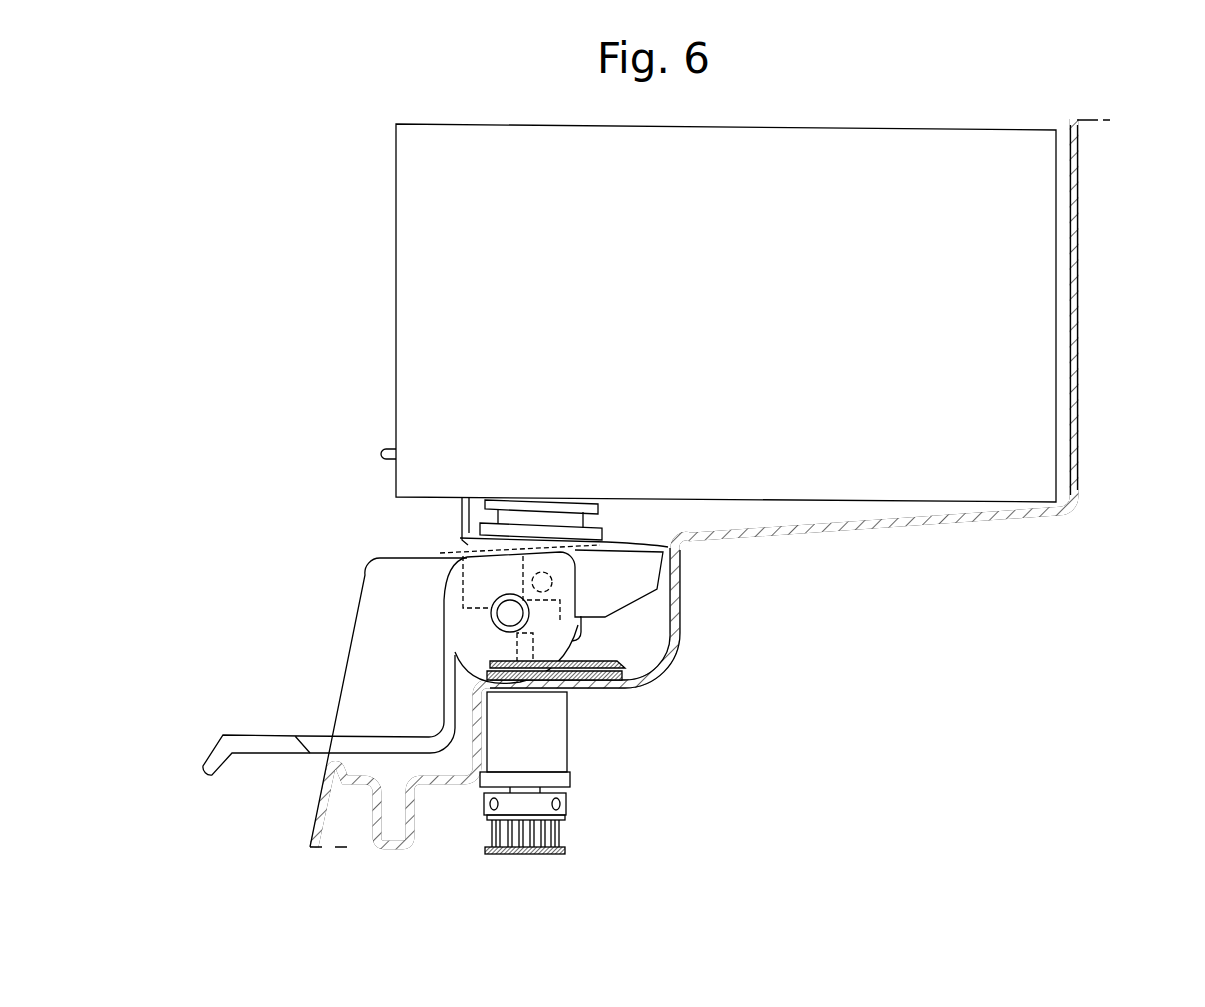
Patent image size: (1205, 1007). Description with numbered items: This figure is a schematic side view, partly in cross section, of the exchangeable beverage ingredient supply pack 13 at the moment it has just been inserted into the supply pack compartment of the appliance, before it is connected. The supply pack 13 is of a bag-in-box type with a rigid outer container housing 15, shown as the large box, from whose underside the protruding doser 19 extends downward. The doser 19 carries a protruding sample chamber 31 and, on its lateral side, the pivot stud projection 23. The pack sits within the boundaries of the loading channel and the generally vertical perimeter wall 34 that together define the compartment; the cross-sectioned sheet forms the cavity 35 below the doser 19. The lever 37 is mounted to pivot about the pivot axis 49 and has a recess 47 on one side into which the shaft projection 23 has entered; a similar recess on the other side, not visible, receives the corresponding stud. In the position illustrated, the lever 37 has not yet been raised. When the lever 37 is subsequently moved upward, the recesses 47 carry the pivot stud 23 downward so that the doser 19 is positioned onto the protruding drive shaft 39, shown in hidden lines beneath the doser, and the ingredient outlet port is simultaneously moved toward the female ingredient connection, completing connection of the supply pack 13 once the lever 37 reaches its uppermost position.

The beverage ingredient supply pack 13 is at (946, 124).
The outer container housing 15 is at (450, 238).
The doser 19 is at (470, 548).
The pivot stud projection 23 is at (545, 572).
The sample chamber 31 is at (650, 570).
The perimeter wall 34 is at (1073, 245).
The cavity 35 is at (640, 630).
The lever 37 is at (220, 760).
The protruding drive shaft 39 is at (512, 653).
The recess 47 is at (517, 580).
The pivot axis 49 is at (491, 615).